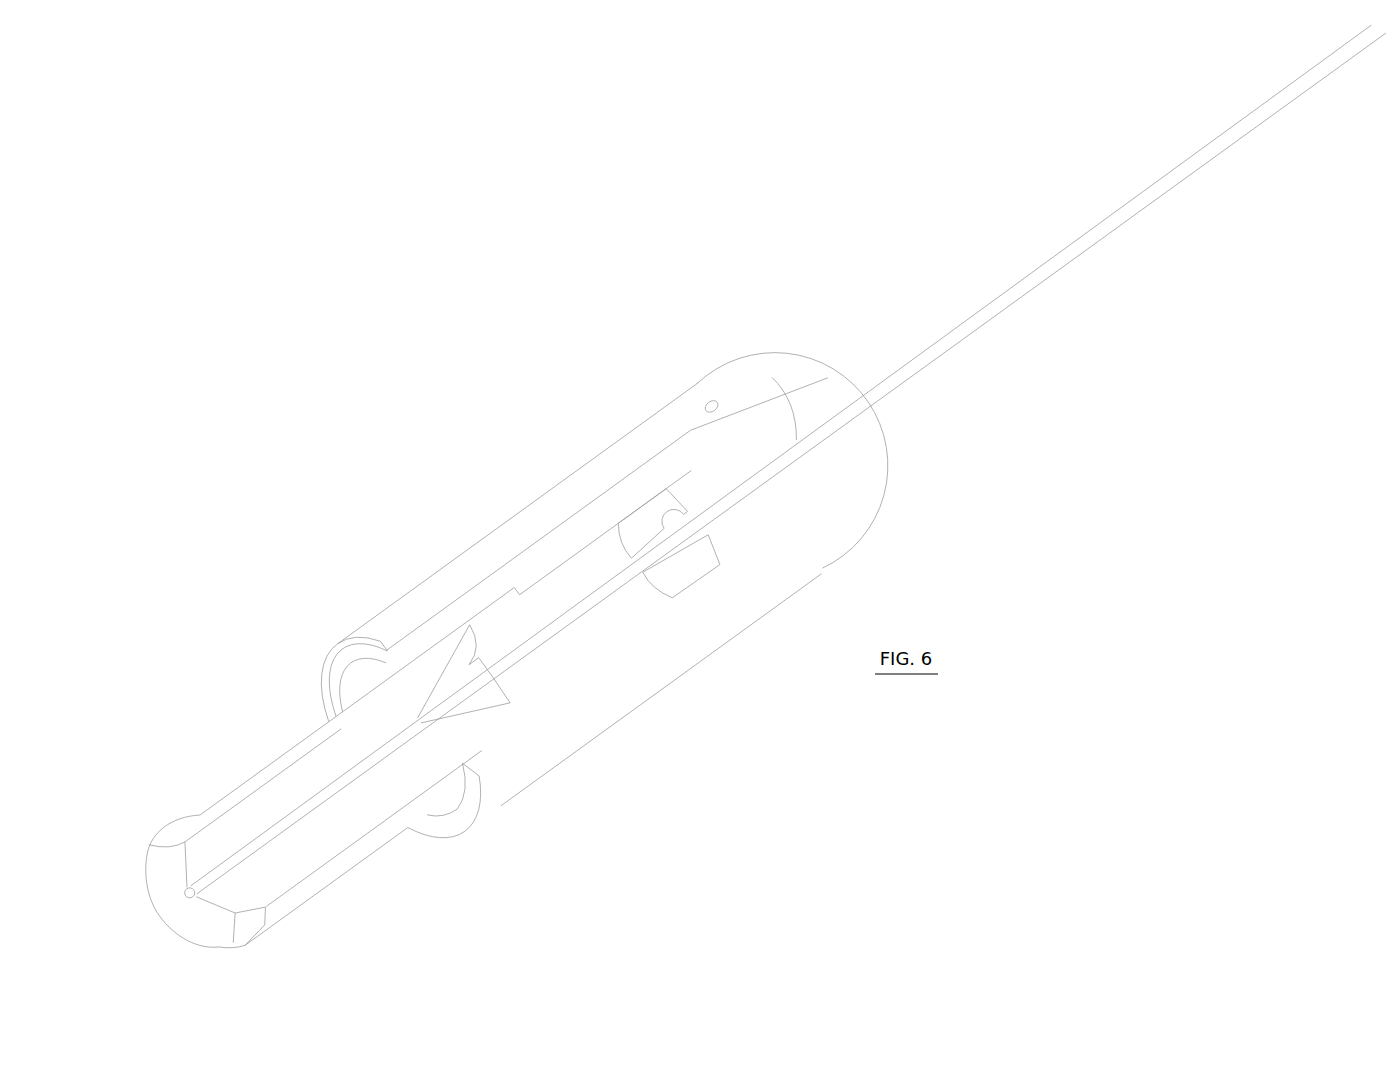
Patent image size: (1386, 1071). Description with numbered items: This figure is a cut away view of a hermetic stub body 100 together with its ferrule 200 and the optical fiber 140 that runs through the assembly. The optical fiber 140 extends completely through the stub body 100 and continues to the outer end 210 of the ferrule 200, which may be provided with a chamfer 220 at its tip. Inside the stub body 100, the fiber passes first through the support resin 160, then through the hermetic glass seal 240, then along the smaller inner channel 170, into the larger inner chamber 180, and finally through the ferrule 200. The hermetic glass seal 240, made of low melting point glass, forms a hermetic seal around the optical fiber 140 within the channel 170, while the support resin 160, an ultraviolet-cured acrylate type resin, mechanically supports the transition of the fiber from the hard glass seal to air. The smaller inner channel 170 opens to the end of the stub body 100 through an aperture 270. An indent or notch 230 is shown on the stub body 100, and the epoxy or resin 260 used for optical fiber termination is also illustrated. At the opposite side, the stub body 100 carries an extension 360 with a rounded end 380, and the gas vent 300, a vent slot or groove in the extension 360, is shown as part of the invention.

The hermetic stub body 100 is at (495, 548).
The optical fiber 140 is at (270, 835).
The support resin 160 is at (810, 375).
The smaller inner channel 170 is at (705, 498).
The larger inner chamber 180 is at (605, 630).
The ferrule 200 is at (272, 777).
The outer end of the ferrule 210 is at (210, 925).
The chamfer 220 is at (178, 822).
The indent or notch 230 is at (712, 408).
The hermetic glass seal 240 is at (800, 473).
The epoxy resin 260 is at (467, 665).
The aperture 270 is at (778, 440).
The gas vent 300 is at (414, 655).
The extension 360 is at (512, 750).
The rounded end 380 is at (369, 650).